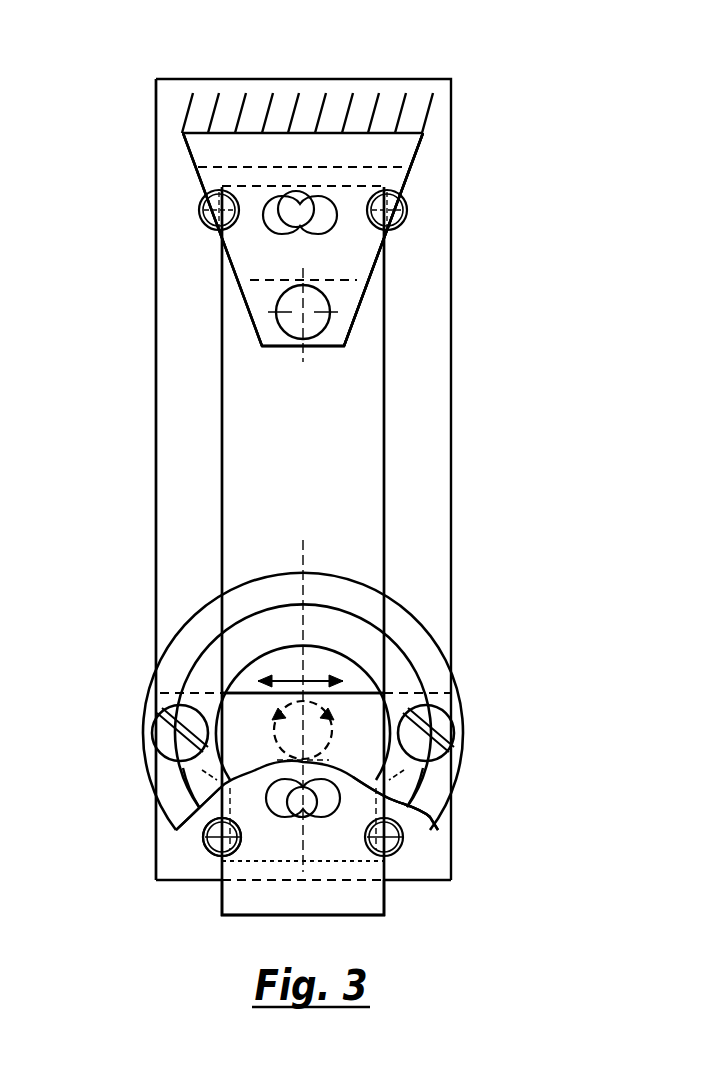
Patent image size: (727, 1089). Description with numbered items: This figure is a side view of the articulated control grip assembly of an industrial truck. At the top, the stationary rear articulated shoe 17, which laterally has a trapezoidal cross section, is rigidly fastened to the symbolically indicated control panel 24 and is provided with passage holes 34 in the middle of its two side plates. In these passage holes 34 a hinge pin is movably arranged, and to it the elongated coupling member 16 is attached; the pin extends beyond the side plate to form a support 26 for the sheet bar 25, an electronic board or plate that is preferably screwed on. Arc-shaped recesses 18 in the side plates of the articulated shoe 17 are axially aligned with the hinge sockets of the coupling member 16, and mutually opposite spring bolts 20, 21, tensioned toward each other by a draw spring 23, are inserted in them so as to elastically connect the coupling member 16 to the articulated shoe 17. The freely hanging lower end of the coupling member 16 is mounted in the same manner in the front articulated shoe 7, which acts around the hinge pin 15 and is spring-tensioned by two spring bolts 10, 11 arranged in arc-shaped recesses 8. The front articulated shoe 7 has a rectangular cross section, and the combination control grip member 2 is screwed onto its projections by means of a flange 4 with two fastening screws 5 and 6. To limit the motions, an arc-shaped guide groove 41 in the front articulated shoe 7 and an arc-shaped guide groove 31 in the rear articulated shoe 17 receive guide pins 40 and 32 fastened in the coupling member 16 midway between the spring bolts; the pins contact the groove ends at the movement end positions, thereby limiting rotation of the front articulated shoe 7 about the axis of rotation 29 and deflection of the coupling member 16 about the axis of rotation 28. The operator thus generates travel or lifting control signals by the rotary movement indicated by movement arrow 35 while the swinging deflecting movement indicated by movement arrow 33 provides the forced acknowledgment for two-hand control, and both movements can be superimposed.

The combination control grip member 2 is at (248, 665).
The flange 4 is at (267, 590).
The fastening screw 5 is at (168, 733).
The fastening screw 6 is at (440, 717).
The second articulated shoe 7 is at (287, 898).
The arc-shaped recesses 8 is at (170, 823).
The spring bolt 10 is at (407, 827).
The spring bolt 11 is at (217, 838).
The first hinge pin 15 is at (317, 710).
The coupling member 16 is at (267, 475).
The rear articulated shoe 17 is at (402, 150).
The arc-shaped recesses 18 is at (387, 230).
The spring bolt 20 is at (402, 208).
The spring bolt 21 is at (203, 197).
The draw spring 23 is at (212, 208).
The control panel 24 is at (393, 107).
The sheet bar 25 is at (198, 427).
The support 26 is at (288, 326).
The axis of rotation 28 is at (303, 313).
The axis of rotation 29 is at (312, 733).
The arc-shaped guide groove 31 is at (273, 215).
The guide pin 32 is at (293, 191).
The movement arrow 33 is at (320, 675).
The passage holes 34 is at (283, 297).
The movement arrow 35 is at (227, 690).
The guide pin 40 is at (436, 818).
The arc-shaped guide groove 41 is at (433, 803).